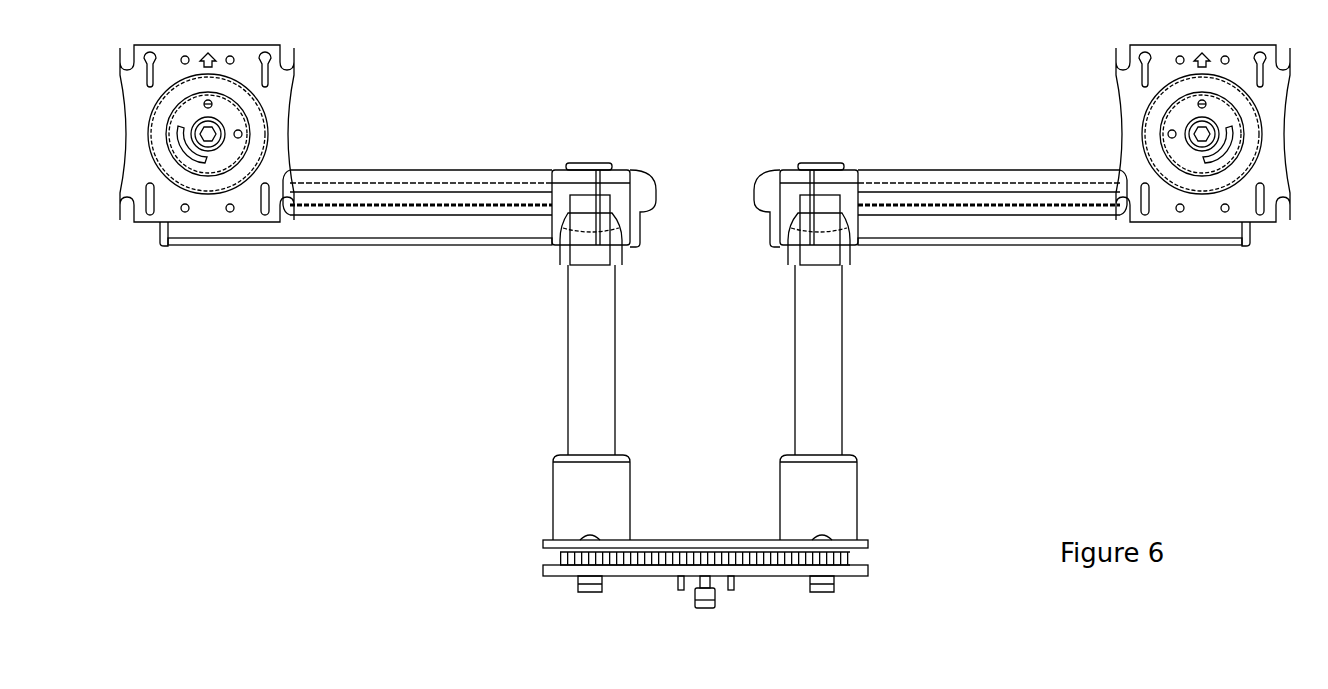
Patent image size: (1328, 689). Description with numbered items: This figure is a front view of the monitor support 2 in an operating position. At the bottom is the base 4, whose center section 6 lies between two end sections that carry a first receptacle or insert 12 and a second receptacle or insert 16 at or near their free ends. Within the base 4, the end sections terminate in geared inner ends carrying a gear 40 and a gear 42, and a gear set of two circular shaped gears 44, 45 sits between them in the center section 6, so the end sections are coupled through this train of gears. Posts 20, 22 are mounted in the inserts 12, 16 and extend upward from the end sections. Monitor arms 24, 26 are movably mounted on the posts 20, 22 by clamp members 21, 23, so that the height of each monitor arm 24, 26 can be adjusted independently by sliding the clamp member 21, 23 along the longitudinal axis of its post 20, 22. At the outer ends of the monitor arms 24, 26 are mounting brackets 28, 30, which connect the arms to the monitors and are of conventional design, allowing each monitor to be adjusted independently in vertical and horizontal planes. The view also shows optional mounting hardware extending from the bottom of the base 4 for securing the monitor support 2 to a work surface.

The monitor support 2 is at (870, 85).
The base 4 is at (750, 580).
The center section 6 is at (673, 570).
The first receptacle or insert 12 is at (852, 492).
The second receptacle or insert 16 is at (565, 496).
The post 20 is at (838, 355).
The clamp member 21 is at (797, 178).
The post 22 is at (578, 331).
The clamp member 23 is at (630, 170).
The monitor arm 24 is at (943, 178).
The monitor arm 26 is at (450, 172).
The mounting bracket 28 is at (1125, 88).
The mounting bracket 30 is at (288, 83).
The gear 40 is at (831, 560).
The gear 42 is at (578, 565).
The circular shaped gear 44 is at (757, 562).
The circular shaped gear 45 is at (676, 556).